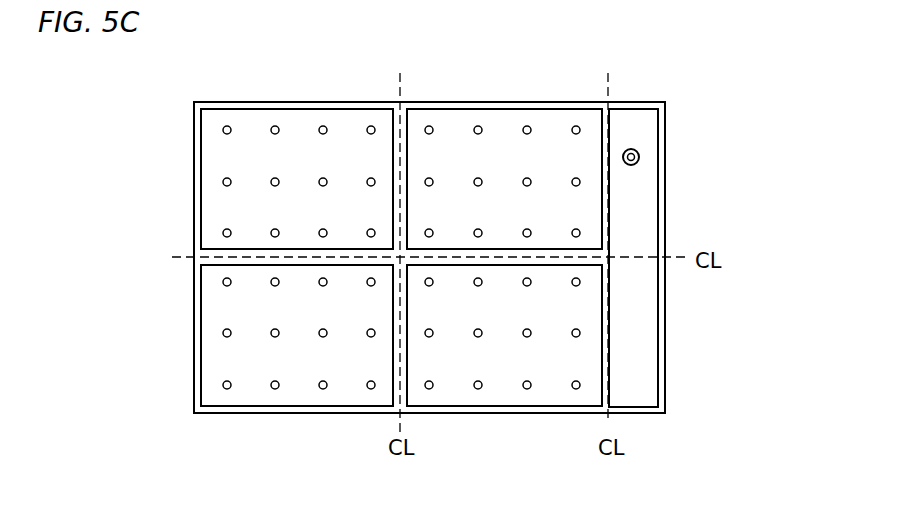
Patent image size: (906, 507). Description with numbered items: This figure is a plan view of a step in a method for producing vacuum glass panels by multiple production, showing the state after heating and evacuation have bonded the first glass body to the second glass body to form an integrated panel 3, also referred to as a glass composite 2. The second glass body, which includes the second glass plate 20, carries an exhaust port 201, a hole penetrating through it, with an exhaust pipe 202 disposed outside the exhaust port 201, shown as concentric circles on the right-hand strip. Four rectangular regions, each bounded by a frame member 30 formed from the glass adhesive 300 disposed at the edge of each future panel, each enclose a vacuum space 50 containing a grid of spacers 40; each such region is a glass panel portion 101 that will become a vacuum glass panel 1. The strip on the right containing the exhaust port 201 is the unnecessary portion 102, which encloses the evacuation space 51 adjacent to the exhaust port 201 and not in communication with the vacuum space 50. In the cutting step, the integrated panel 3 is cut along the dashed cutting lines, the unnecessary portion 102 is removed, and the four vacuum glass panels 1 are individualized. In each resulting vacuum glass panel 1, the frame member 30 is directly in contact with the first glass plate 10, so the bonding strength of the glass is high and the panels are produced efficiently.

The vacuum glass panel 1 is at (391, 269).
The glass panel portion 101 is at (213, 91).
The unnecessary portion 102 is at (677, 355).
The glass composite 2 is at (696, 225).
The integrated panel 3 is at (696, 225).
The first glass plate 10 is at (630, 318).
The second glass plate 20 is at (633, 215).
The exhaust port 201 is at (634, 156).
The exhaust pipe 202 is at (639, 160).
The frame member 30 is at (340, 107).
The glass adhesive 300 is at (401, 271).
The spacer 40 is at (273, 127).
The vacuum space 50 is at (349, 374).
The evacuation space 51 is at (630, 380).